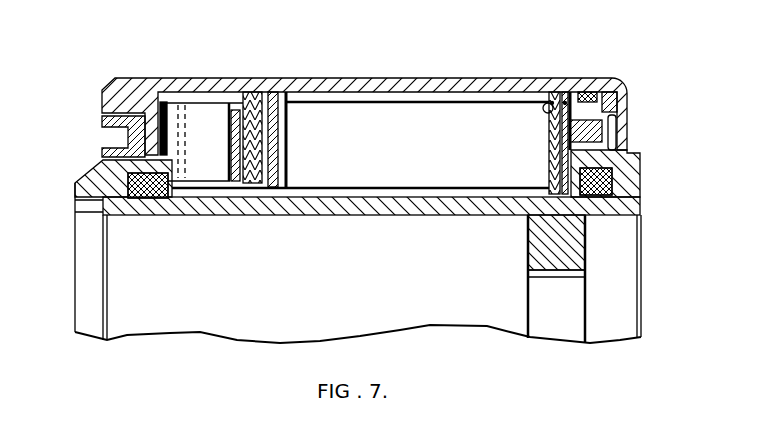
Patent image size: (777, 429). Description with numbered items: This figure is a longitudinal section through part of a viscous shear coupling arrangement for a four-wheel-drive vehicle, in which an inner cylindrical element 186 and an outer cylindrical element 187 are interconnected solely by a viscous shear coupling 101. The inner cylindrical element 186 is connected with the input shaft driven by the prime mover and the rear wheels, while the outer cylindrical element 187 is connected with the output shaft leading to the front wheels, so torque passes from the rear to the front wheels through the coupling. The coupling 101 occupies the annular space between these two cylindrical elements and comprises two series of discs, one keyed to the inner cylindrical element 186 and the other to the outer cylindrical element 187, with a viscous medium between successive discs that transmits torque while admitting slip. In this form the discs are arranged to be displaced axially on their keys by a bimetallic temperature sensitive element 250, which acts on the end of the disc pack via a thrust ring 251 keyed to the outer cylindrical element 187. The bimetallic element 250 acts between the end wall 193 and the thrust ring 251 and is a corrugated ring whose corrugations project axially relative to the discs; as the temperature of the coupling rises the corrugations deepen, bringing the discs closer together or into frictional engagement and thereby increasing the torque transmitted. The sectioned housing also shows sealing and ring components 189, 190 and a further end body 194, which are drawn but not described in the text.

The viscous shear coupling 101 is at (370, 126).
The inner cylindrical element 186 is at (377, 205).
The outer cylindrical element 187 is at (315, 84).
The seal 189 is at (572, 105).
The sealing ring 190 is at (277, 93).
The end wall 193 is at (105, 185).
The right end body 194 is at (623, 148).
The bimetallic temperature sensitive element 250 is at (203, 138).
The thrust ring 251 is at (252, 102).